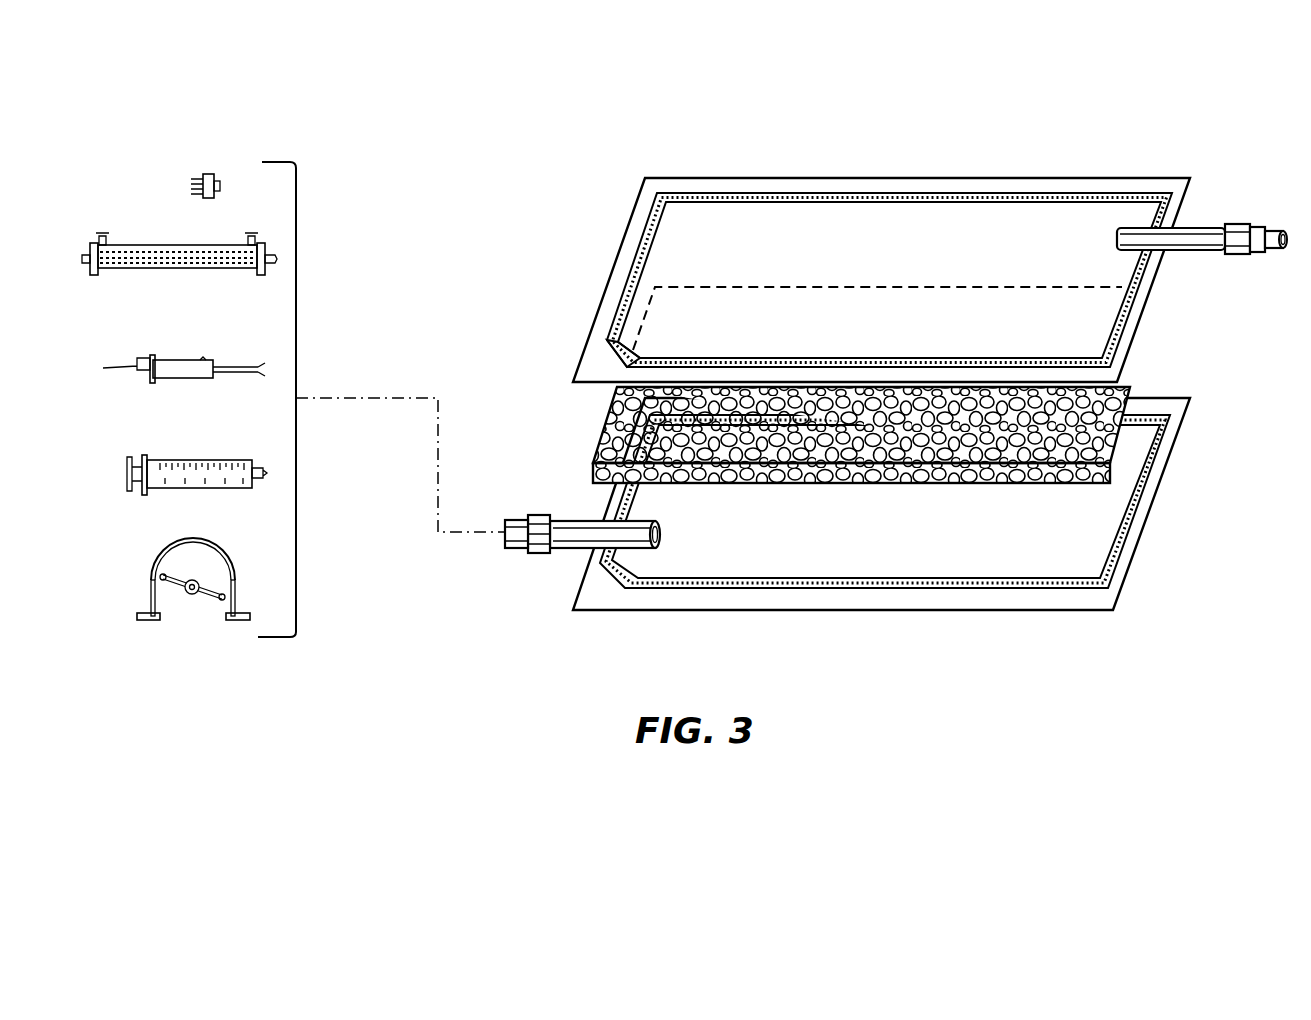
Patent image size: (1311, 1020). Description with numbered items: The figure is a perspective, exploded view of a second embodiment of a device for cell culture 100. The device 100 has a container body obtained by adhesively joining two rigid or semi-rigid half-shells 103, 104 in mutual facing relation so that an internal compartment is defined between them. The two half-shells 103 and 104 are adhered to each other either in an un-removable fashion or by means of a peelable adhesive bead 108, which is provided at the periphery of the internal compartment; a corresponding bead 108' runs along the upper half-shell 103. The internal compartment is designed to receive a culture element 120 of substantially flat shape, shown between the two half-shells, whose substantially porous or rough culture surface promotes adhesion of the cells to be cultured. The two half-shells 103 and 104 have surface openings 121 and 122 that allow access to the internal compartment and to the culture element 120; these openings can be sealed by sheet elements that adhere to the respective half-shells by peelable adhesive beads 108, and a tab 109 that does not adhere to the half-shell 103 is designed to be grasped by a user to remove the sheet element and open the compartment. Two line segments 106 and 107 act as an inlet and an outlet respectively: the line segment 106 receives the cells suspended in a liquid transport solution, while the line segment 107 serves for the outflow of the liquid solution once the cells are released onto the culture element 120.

The device for cell culture 100 is at (945, 126).
The half-shell 103 is at (600, 374).
The half-shell 104 is at (767, 602).
The line segment 106 is at (585, 537).
The line segment 107 is at (1202, 237).
The peelable adhesive bead 108 is at (906, 516).
The top plate frame / seal 108' is at (941, 280).
The tab 109 is at (597, 353).
The culture element 120 is at (1128, 388).
The surface opening 121 is at (775, 210).
The surface opening 122 is at (980, 564).